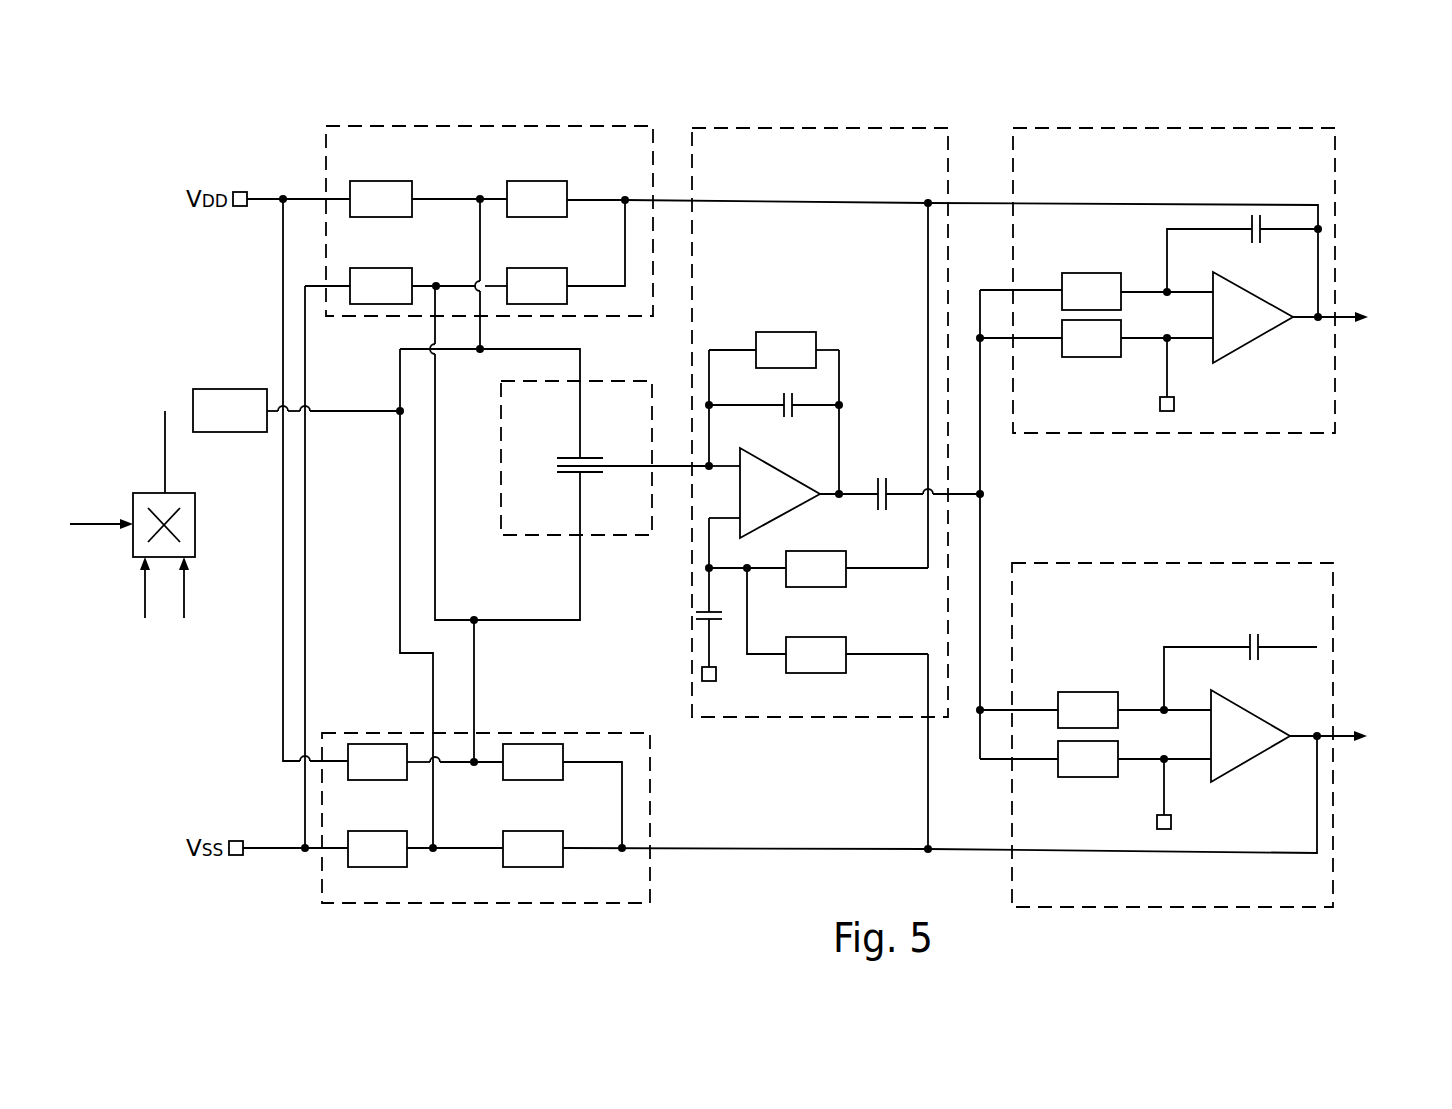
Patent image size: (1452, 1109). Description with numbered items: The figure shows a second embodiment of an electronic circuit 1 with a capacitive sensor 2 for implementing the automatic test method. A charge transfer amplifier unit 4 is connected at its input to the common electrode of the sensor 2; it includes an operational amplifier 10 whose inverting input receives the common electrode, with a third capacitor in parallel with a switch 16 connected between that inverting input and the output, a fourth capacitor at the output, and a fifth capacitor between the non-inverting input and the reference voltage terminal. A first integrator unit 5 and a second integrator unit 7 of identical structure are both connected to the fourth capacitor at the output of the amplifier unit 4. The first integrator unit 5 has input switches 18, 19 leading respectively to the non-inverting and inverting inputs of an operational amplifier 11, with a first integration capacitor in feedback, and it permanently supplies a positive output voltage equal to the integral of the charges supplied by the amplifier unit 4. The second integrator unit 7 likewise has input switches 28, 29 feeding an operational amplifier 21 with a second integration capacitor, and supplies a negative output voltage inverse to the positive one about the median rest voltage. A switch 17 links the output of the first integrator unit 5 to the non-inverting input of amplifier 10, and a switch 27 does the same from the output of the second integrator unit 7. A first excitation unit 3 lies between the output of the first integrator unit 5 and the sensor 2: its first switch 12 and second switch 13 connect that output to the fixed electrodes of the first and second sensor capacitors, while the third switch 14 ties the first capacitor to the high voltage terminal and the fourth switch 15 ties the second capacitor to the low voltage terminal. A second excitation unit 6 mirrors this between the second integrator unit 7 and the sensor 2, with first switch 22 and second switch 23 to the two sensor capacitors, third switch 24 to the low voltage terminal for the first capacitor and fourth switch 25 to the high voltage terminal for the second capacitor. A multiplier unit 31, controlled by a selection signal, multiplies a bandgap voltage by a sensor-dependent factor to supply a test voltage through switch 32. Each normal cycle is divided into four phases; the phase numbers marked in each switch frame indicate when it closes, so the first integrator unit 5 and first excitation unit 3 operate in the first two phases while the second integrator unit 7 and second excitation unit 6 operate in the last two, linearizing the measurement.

The electronic circuit 1 is at (1372, 203).
The sensor 2 is at (512, 551).
The first excitation unit 3 is at (631, 124).
The charge transfer amplifier unit 4 is at (925, 124).
The first integrator unit 5 is at (1271, 124).
The second excitation unit 6 is at (652, 890).
The second integrator unit 7 is at (1337, 889).
The operational amplifier 10 is at (769, 507).
The operational amplifier 11 is at (1268, 321).
The first switch 12 is at (555, 186).
The second switch 13 is at (555, 272).
The third switch 14 is at (357, 186).
The fourth switch 15 is at (386, 305).
The switch 16 is at (812, 338).
The switch 17 is at (823, 587).
The input switch 18 is at (1097, 357).
The input switch 19 is at (1093, 273).
The operational amplifier 21 is at (1266, 741).
The first switch 22 is at (553, 867).
The second switch 23 is at (553, 780).
The third switch 24 is at (352, 857).
The fourth switch 25 is at (383, 744).
The switch 27 is at (823, 673).
The input switch 28 is at (1095, 777).
The input switch 29 is at (1090, 692).
The multiplier unit 31 is at (196, 524).
The switch 32 is at (228, 432).